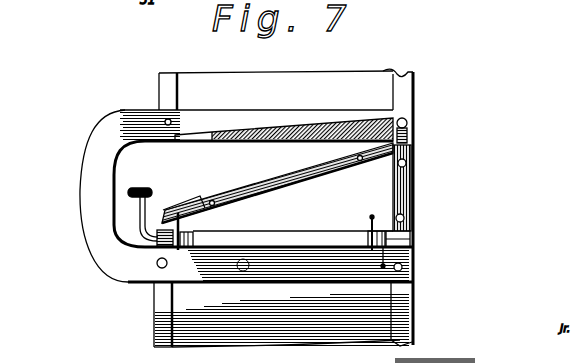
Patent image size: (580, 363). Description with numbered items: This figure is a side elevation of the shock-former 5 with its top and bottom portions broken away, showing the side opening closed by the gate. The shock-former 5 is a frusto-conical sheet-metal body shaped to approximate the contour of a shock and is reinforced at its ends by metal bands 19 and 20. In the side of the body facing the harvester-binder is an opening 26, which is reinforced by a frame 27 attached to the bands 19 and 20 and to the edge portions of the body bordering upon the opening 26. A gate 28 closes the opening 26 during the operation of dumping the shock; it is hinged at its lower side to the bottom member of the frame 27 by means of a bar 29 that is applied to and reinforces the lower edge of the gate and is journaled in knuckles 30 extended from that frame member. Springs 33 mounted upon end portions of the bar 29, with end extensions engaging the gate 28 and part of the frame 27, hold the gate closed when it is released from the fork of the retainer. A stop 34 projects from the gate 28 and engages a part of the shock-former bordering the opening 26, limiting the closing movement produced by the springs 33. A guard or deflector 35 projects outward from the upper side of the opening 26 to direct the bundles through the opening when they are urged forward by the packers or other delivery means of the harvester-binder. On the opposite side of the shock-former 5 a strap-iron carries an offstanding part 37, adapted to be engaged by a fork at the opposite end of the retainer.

The shock-former 5 is at (282, 329).
The metal band 19 is at (246, 209).
The metal band 20 is at (415, 80).
The opening 26 is at (277, 183).
The frame 27 is at (308, 100).
The gate 28 is at (388, 174).
The bar 29 is at (297, 233).
The knuckles 30 is at (153, 247).
The springs 33 is at (181, 222).
The stop 34 is at (408, 124).
The guard or deflector 35 is at (355, 124).
The offstanding part 37 is at (142, 200).